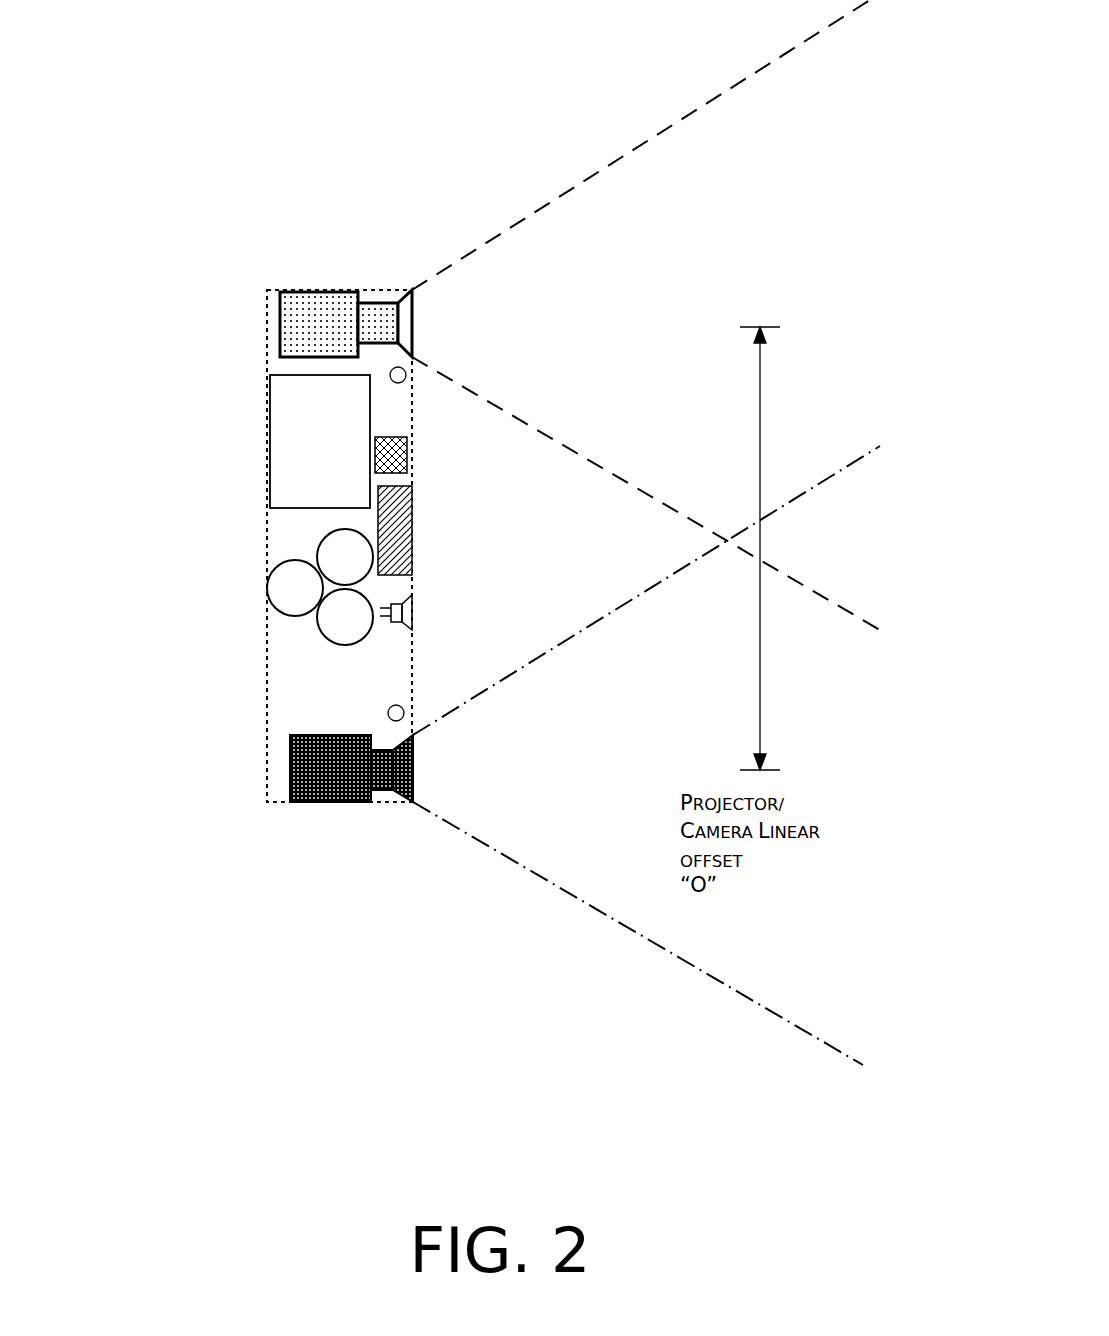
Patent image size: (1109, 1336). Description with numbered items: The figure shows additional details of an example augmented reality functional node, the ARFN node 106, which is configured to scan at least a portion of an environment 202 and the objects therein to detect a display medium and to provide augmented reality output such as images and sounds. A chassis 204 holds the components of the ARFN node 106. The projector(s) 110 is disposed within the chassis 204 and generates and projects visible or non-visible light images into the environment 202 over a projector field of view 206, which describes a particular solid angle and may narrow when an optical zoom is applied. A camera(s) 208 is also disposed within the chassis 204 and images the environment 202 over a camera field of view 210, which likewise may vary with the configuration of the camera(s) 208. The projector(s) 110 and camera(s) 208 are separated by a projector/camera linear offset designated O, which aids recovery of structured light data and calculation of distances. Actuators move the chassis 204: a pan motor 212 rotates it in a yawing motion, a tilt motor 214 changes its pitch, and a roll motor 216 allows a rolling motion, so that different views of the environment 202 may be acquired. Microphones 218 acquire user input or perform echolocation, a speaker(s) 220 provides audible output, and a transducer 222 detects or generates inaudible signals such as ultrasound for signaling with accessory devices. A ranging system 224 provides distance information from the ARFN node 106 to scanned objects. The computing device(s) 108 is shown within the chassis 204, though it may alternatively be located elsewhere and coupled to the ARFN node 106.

The ARFN node 106 is at (275, 290).
The chassis 204 is at (341, 290).
The projector(s) 110 is at (318, 322).
The computing device(s) 108 is at (320, 443).
The microphones 218 is at (406, 372).
The transducer 222 is at (410, 440).
The ranging system 224 is at (410, 522).
The pan motor 212 is at (318, 555).
The tilt motor 214 is at (268, 588).
The roll motor 216 is at (317, 617).
The speaker(s) 220 is at (415, 605).
The camera(s) 208 is at (290, 803).
The projector field of view 206 is at (645, 138).
The camera field of view 210 is at (592, 906).
The environment 202 is at (883, 548).